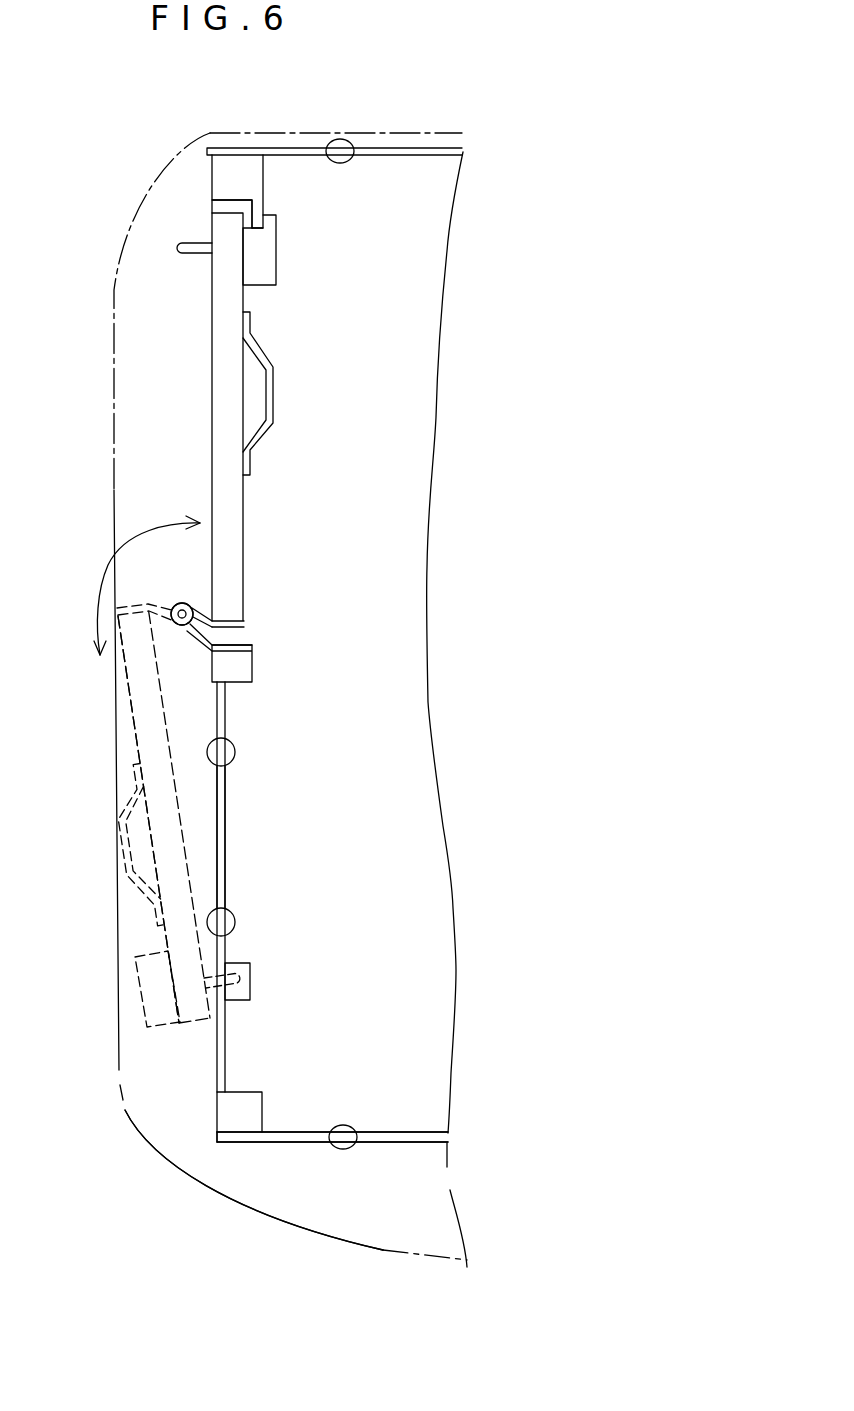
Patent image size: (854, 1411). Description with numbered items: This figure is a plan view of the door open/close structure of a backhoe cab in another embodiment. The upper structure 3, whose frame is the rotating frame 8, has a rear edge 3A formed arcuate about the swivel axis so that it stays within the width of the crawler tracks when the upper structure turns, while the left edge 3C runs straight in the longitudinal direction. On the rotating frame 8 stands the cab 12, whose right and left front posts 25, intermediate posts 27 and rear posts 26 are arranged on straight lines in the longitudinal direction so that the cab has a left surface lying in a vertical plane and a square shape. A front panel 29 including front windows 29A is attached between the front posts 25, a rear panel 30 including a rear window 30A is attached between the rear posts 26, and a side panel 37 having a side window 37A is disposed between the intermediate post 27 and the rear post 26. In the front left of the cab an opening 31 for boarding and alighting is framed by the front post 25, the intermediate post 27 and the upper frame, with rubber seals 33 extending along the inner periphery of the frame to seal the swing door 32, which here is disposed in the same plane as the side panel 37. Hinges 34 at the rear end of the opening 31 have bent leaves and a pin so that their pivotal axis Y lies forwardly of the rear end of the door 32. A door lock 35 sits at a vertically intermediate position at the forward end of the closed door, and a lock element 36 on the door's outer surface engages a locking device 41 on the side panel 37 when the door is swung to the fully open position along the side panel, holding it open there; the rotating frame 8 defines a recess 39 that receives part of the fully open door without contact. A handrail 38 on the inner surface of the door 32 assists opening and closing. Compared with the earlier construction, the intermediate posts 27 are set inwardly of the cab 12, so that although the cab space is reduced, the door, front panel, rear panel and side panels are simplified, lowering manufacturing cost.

The upper structure 3 is at (254, 1204).
The rear edge 3A is at (440, 1263).
The left edge 3C is at (117, 693).
The rotating frame 8 is at (290, 1265).
The cab 12 is at (240, 1158).
The front posts 25 is at (253, 177).
The rear posts 26 is at (262, 1092).
The intermediate posts 27 is at (240, 662).
The front panel 29 is at (370, 140).
The front windows 29A is at (423, 146).
The rear panel 30 is at (365, 1103).
The rear window 30A is at (426, 1132).
The opening 31 is at (258, 498).
The swing door 32 is at (212, 490).
The rubber seals 33 is at (218, 205).
The hinges 34 is at (177, 603).
The pivotal axis Y is at (182, 583).
The door lock 35 is at (266, 250).
The lock element 36 is at (190, 257).
The side panel 37 is at (230, 718).
The side window 37A is at (226, 835).
The handrail 38 is at (273, 392).
The recess 39 is at (137, 925).
The locking device 41 is at (250, 987).